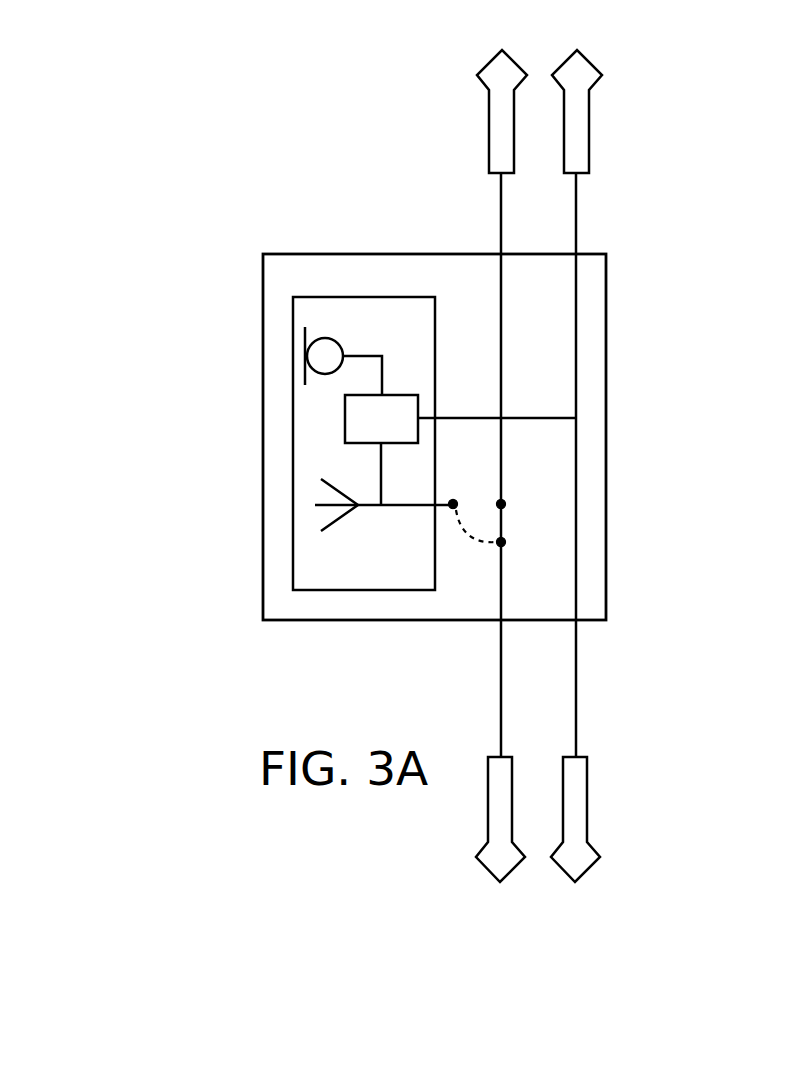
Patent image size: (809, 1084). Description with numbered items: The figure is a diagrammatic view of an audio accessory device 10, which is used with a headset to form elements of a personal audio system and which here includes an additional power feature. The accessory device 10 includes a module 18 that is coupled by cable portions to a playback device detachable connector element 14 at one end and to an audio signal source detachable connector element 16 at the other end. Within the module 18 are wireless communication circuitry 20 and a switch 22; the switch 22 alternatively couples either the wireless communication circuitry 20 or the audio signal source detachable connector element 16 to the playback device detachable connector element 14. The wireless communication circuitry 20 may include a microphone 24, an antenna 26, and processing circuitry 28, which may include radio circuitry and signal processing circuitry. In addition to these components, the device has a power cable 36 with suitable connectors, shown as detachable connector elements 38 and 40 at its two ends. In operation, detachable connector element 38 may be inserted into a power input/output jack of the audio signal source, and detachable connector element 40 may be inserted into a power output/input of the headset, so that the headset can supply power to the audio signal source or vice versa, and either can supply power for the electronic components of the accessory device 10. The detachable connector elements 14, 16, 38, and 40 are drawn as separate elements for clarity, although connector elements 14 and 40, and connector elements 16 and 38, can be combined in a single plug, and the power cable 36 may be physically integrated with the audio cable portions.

The accessory device 10 is at (305, 236).
The playback device detachable connector element 14 is at (487, 128).
The audio signal source detachable connector element 16 is at (488, 808).
The module 18 is at (606, 545).
The wireless communication circuitry 20 is at (291, 425).
The switch 22 is at (502, 522).
The microphone 24 is at (342, 348).
The antenna 26 is at (347, 513).
The processing circuitry 28 is at (404, 395).
The power cable 36 is at (577, 215).
The detachable connector element 38 is at (587, 817).
The detachable connector element 40 is at (589, 137).